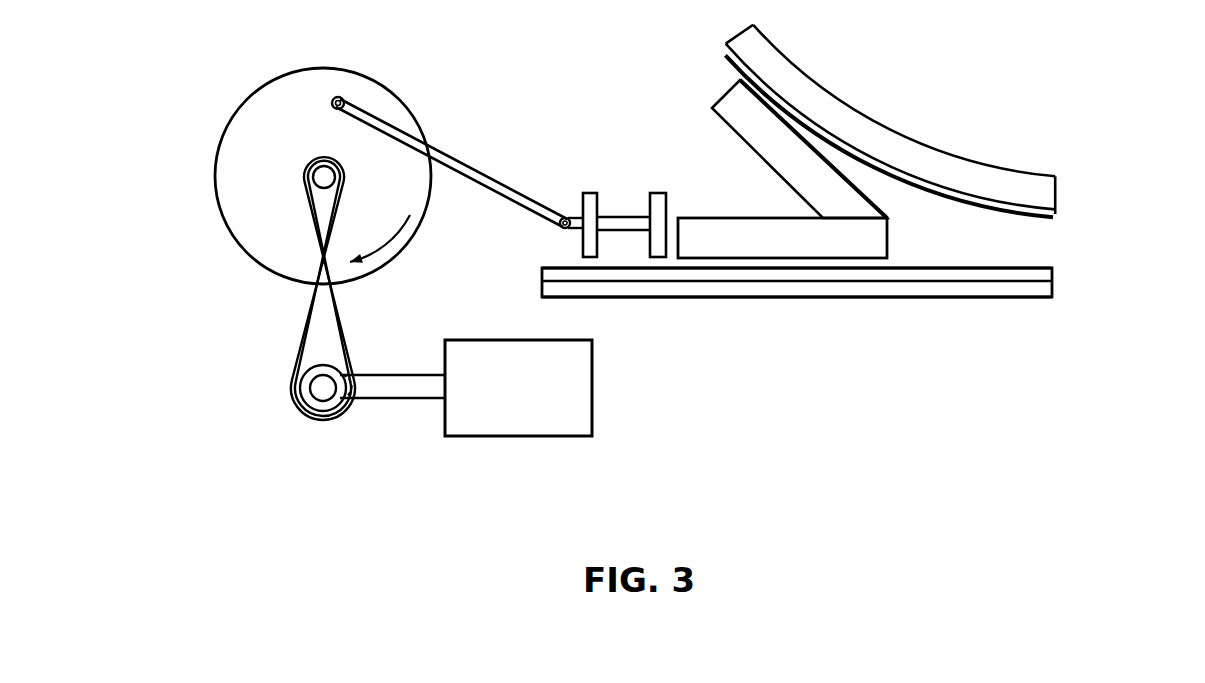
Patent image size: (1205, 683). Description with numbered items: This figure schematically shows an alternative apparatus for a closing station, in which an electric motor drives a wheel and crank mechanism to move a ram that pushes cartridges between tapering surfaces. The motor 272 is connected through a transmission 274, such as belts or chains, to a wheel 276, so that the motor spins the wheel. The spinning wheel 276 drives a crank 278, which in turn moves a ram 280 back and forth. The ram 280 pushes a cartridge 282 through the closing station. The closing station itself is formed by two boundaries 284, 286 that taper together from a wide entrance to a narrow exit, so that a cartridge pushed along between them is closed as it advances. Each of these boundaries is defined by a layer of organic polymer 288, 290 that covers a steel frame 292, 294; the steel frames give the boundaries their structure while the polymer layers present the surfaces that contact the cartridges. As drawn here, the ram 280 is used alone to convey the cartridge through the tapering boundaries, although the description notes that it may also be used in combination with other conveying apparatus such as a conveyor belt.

The motor 272 is at (543, 410).
The transmission 274 is at (310, 283).
The wheel 276 is at (297, 147).
The crank 278 is at (507, 192).
The ram 280 is at (630, 217).
The cartridge 282 is at (752, 181).
The boundary 284 is at (950, 257).
The boundary 286 is at (938, 195).
The layer of organic polymer 288 is at (888, 275).
The layer of organic polymer 290 is at (875, 160).
The steel frame 292 is at (757, 290).
The steel frame 294 is at (810, 103).